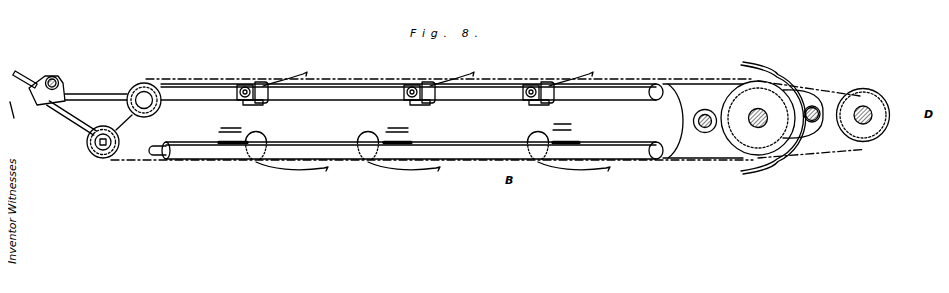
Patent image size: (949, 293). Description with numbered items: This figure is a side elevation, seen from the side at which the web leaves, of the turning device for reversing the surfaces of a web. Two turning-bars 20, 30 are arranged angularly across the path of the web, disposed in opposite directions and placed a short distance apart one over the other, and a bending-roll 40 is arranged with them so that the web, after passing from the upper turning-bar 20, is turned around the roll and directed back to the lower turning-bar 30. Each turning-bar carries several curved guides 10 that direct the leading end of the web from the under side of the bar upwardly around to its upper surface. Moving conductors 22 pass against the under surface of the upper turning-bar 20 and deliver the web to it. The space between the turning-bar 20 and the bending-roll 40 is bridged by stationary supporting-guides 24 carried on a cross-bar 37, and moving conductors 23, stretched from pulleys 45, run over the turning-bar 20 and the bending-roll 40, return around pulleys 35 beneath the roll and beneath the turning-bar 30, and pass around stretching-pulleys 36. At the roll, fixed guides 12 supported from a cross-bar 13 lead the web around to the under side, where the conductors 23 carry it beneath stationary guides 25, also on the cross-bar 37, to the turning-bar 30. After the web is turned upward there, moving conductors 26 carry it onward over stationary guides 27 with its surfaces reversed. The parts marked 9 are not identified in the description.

The spring 9 is at (433, 118).
The curved guides 10 is at (241, 77).
The fixed guides 12 is at (774, 78).
The cross-bar 13 is at (810, 96).
The upper turning-bar 20 is at (350, 80).
The moving conductors 22 is at (233, 119).
The moving conductors 23 is at (222, 94).
The stationary supporting-guides 24 is at (684, 96).
The stationary guides 25 is at (684, 147).
The moving conductors 26 is at (210, 124).
The stationary guides 27 is at (214, 136).
The turning-bar 30 is at (460, 145).
The pulleys 35 is at (863, 115).
The stretching-pulleys 36 is at (101, 150).
The cross-bar 37 is at (685, 113).
The bending-roll 40 is at (758, 118).
The pulleys 45 is at (133, 75).